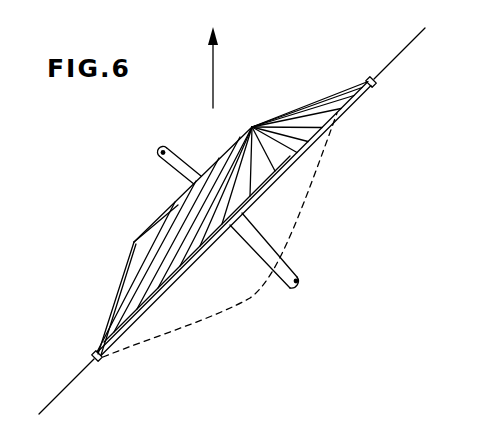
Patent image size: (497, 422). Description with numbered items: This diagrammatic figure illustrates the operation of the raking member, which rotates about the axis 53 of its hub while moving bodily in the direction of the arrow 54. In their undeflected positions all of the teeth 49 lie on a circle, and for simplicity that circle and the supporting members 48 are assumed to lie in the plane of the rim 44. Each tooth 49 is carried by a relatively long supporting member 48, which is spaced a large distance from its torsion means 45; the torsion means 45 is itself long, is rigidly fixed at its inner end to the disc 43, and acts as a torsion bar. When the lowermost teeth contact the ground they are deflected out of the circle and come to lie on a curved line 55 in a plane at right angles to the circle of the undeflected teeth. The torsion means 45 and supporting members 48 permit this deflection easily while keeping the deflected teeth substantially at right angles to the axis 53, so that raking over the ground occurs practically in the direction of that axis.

The disc 43 is at (232, 219).
The rim 44 is at (351, 112).
The torsion means 45 is at (250, 151).
The supporting member 48 is at (393, 62).
The tooth 49 is at (424, 31).
The axis 53 is at (167, 170).
The arrow 54 is at (213, 84).
The curved line 55 is at (238, 303).